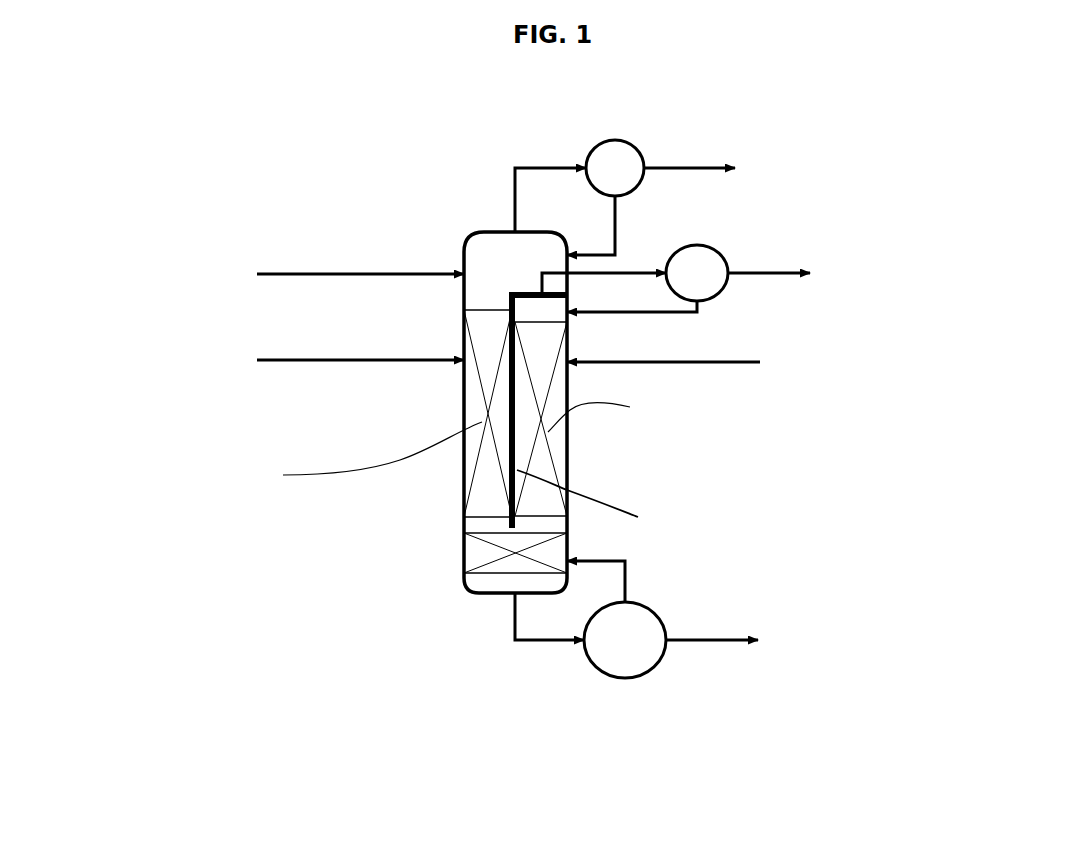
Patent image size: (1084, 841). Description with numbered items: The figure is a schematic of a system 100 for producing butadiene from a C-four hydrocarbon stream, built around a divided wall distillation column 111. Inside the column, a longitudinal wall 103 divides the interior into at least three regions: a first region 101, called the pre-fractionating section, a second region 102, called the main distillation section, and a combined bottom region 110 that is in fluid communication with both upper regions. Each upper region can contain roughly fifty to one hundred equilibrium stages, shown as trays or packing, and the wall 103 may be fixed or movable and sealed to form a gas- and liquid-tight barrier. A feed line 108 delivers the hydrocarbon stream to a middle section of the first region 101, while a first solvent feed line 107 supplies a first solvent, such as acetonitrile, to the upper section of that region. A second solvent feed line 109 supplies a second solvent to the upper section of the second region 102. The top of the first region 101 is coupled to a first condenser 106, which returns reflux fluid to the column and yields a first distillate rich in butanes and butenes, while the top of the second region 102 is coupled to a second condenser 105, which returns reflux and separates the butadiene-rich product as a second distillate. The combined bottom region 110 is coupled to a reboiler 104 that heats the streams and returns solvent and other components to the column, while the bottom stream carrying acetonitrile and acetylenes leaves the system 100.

The system 100 is at (928, 112).
The first region 101 is at (487, 478).
The second region 102 is at (557, 449).
The longitudinal wall 103 is at (517, 510).
The reboiler 104 is at (643, 653).
The second condenser 105 is at (728, 284).
The first condenser 106 is at (588, 162).
The first solvent feed line 107 is at (377, 274).
The feed line 108 is at (257, 360).
The second solvent feed line 109 is at (710, 362).
The combined bottom region 110 is at (495, 568).
The divided wall distillation column 111 is at (467, 585).